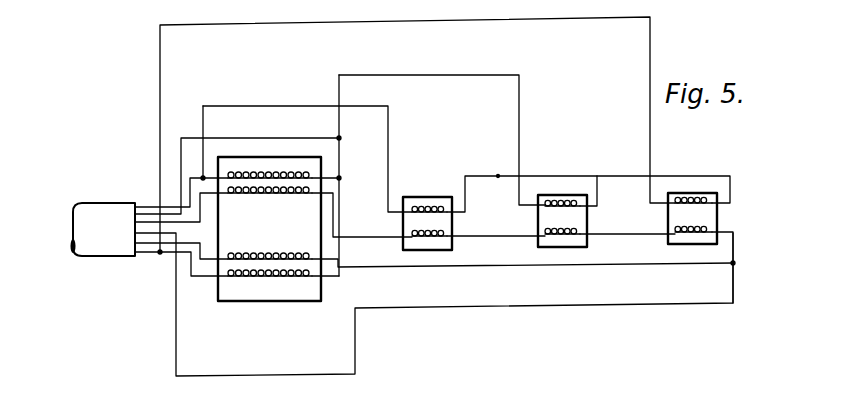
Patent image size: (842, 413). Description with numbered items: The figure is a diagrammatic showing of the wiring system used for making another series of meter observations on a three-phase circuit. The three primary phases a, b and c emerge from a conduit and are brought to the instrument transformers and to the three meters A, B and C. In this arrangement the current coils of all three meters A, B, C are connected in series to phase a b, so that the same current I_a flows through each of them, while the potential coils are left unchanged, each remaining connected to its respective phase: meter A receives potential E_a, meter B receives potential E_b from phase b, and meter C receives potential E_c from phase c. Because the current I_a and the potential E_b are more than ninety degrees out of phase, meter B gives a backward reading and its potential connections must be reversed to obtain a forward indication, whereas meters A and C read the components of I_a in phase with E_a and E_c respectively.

The element conduit is at (78, 258).
The phase a is at (202, 178).
The phase b is at (188, 137).
The phase c is at (200, 243).
The meter A is at (430, 208).
The meter B is at (563, 204).
The meter C is at (692, 202).